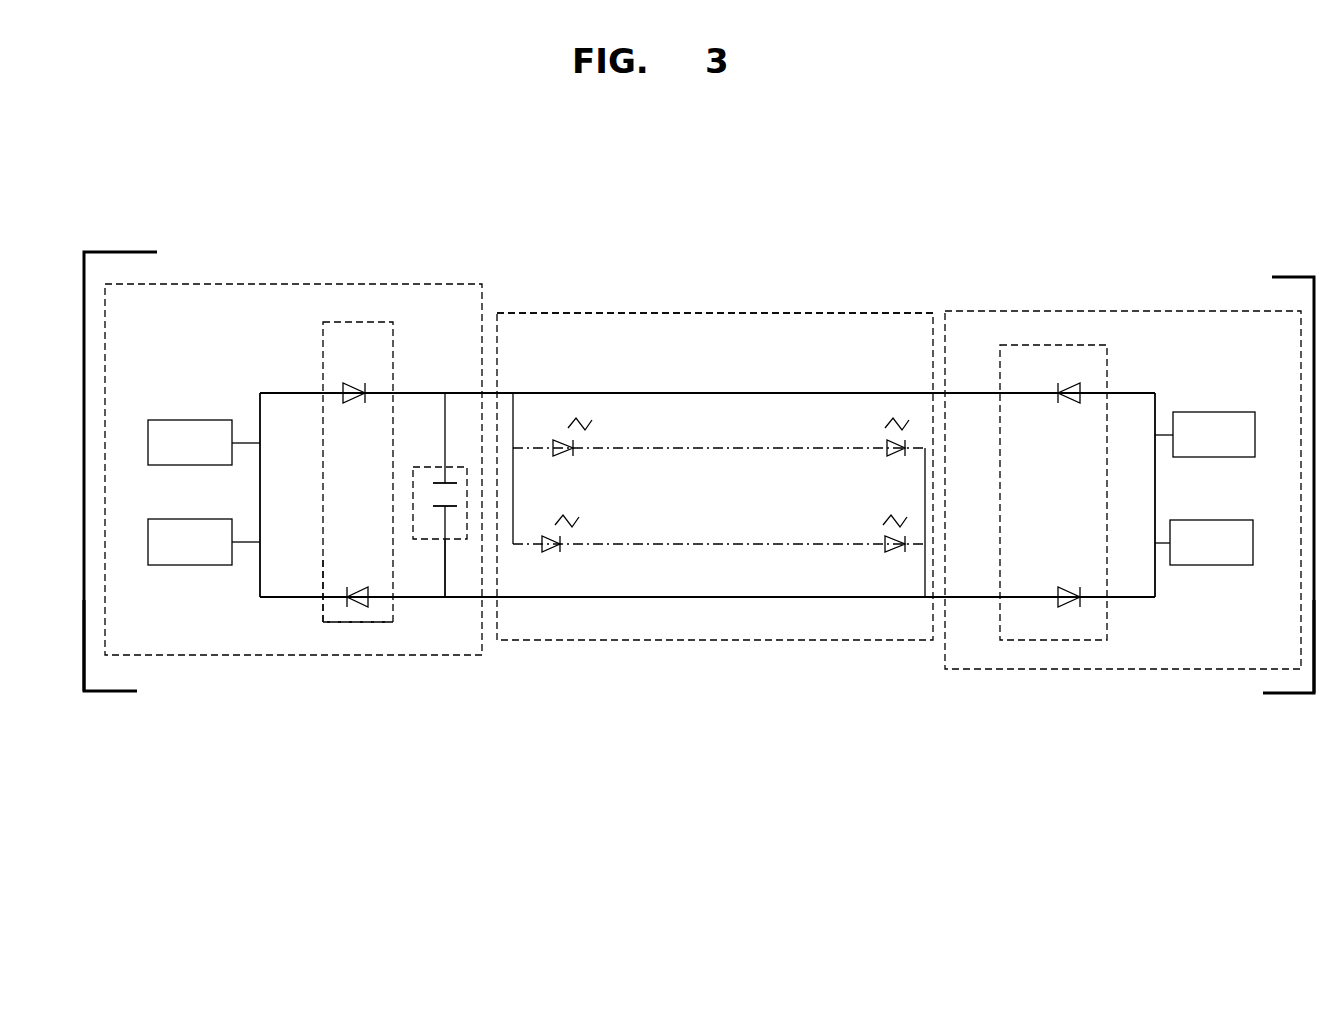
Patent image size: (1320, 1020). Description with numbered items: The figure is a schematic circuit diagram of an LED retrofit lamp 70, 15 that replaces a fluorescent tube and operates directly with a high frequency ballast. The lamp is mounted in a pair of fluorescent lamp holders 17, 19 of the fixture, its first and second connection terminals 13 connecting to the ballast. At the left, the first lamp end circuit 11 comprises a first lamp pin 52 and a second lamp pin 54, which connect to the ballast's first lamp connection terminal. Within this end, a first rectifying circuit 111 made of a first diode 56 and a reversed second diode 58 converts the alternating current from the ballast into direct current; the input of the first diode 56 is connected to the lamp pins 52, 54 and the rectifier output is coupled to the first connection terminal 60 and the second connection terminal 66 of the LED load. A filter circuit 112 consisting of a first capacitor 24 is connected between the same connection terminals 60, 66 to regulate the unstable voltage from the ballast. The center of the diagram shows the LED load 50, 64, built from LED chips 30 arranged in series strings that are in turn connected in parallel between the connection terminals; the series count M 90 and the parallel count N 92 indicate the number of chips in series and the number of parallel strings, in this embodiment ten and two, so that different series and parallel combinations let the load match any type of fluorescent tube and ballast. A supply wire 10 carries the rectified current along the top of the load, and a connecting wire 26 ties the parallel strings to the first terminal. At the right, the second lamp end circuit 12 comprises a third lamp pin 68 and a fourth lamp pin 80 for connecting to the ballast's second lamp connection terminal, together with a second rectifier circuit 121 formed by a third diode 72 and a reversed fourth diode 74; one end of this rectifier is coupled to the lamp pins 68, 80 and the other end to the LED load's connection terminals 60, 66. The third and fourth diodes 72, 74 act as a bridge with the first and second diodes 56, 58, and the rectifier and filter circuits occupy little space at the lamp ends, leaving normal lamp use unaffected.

The conductor / wire 10 is at (843, 398).
The first lamp end circuit 11 is at (279, 284).
The second lamp end circuit 12 is at (973, 670).
The connection terminals 13 is at (188, 678).
The LED retrofit lamp 15 is at (715, 262).
The fluorescent lamp holder 17 is at (148, 236).
The fluorescent lamp holder 19 is at (1295, 267).
The capacitor C1 24 is at (438, 473).
The connecting conductor 26 is at (515, 420).
The LED chips 30 is at (719, 540).
The LED load 50 is at (777, 313).
The first lamp pin 52 is at (213, 418).
The second lamp pin 54 is at (190, 565).
The first diode 56 is at (373, 322).
The second diode 58 is at (368, 588).
The first connection terminal 60 is at (480, 392).
The LED load 64 is at (655, 570).
The second connection terminal 66 is at (965, 599).
The third lamp pin 68 is at (1220, 412).
The LED retrofit lamp 70 is at (527, 240).
The third diode 72 is at (1077, 390).
The fourth diode 74 is at (1062, 590).
The fourth lamp pin 80 is at (1213, 567).
The M LED count 90 is at (850, 472).
The N LED count 92 is at (637, 555).
The first rectifying circuit 111 is at (330, 625).
The filter circuit 112 is at (435, 545).
The second rectifier circuit 121 is at (1033, 343).